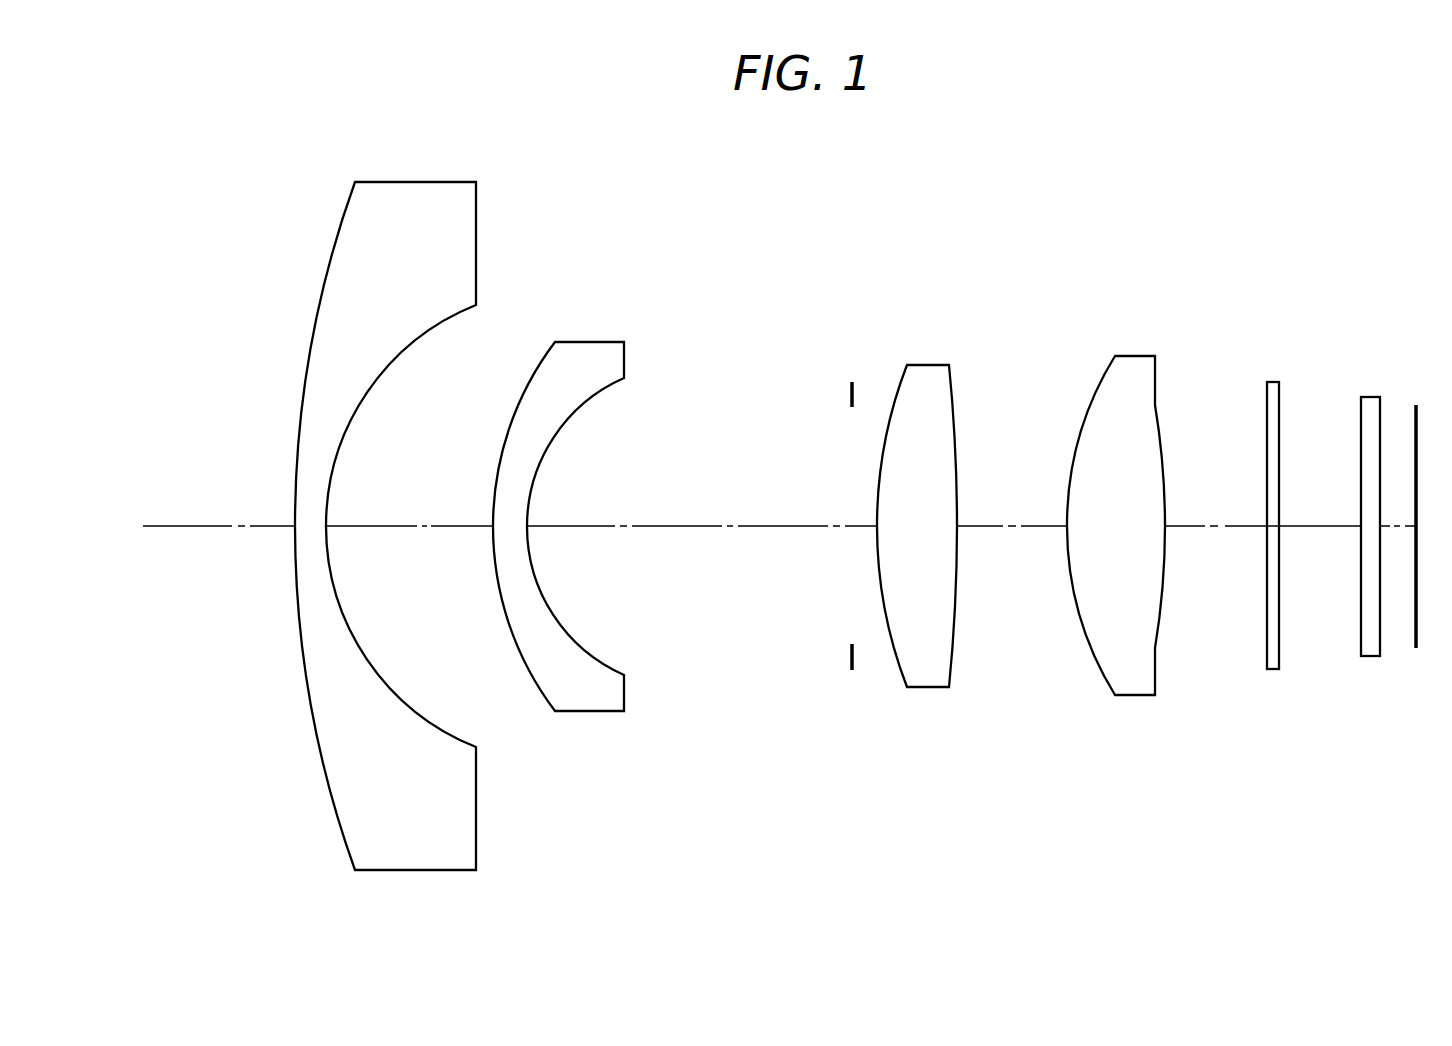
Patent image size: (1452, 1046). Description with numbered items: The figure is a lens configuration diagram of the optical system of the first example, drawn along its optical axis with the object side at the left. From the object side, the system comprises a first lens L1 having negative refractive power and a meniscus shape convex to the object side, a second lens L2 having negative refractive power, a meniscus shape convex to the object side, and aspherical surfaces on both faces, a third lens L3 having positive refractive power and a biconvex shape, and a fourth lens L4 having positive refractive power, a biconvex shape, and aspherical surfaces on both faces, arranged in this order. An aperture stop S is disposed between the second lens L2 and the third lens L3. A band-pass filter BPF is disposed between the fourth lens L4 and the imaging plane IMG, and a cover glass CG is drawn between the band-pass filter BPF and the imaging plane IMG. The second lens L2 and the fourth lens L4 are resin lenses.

The first lens L1 is at (412, 182).
The second lens L2 is at (585, 342).
The aperture stop S is at (852, 382).
The third lens L3 is at (932, 365).
The fourth lens L4 is at (1135, 356).
The band-pass filter BPF is at (1272, 671).
The cover glass CG is at (1368, 657).
The imaging plane IMG is at (1416, 407).